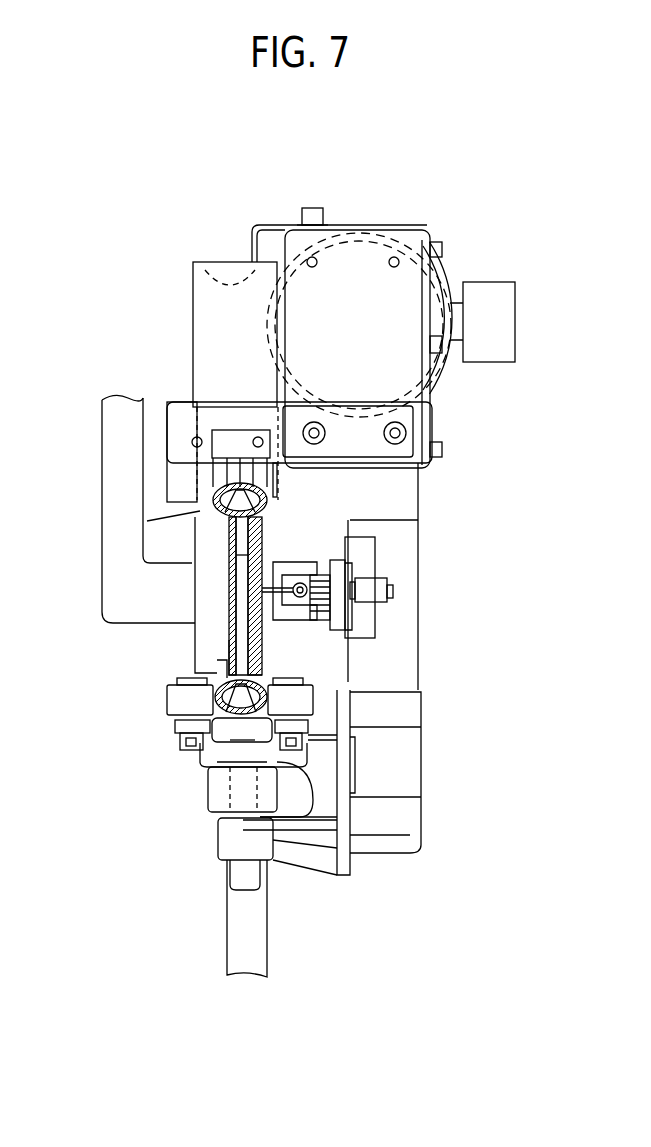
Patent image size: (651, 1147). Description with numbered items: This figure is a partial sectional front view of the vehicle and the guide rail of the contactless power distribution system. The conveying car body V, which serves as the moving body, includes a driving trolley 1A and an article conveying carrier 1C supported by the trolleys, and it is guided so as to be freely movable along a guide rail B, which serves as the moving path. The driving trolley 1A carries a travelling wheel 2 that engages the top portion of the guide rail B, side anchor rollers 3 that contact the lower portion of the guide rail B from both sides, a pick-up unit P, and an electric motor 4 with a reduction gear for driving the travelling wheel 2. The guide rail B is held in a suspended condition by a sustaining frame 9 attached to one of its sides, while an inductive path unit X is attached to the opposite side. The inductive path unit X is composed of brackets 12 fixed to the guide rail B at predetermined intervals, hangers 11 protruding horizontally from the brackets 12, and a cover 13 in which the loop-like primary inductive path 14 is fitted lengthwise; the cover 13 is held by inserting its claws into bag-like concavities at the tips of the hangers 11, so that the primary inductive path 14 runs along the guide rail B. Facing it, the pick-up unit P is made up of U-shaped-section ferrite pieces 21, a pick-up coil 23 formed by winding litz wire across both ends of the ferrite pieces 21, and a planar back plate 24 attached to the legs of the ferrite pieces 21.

The driving trolley 1A is at (410, 593).
The article conveying carrier 1C is at (222, 954).
The travelling wheel 2 is at (147, 520).
The side anchor rollers 3 is at (160, 703).
The electric motor 4 is at (446, 276).
The sustaining frame 9 is at (107, 523).
The hangers 11 is at (230, 635).
The brackets 12 is at (262, 553).
The cover 13 is at (317, 617).
The primary inductive path 14 is at (298, 620).
The ferrite pieces 21 is at (337, 620).
The pick-up coil 23 is at (347, 612).
The back plate 24 is at (387, 603).
The guide rail B is at (300, 466).
The pick-up unit P is at (347, 558).
The conveying car body V is at (516, 403).
The inductive path unit X is at (291, 587).